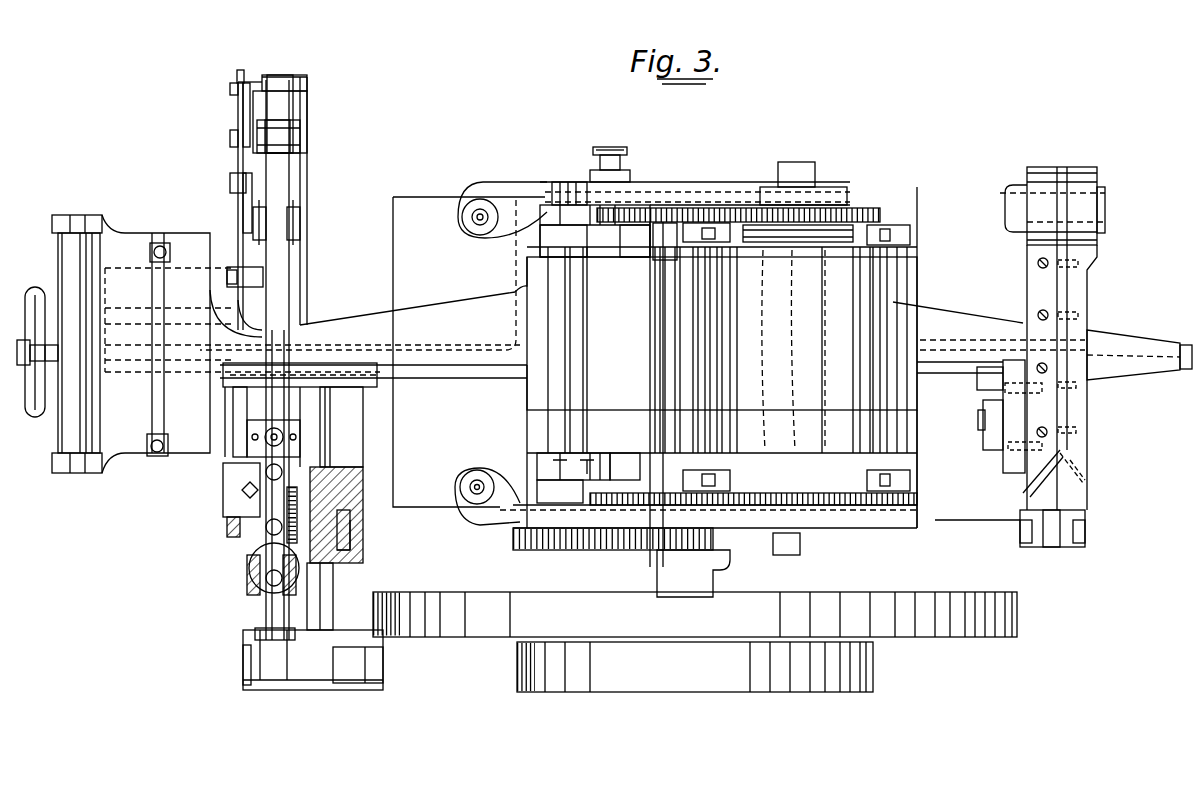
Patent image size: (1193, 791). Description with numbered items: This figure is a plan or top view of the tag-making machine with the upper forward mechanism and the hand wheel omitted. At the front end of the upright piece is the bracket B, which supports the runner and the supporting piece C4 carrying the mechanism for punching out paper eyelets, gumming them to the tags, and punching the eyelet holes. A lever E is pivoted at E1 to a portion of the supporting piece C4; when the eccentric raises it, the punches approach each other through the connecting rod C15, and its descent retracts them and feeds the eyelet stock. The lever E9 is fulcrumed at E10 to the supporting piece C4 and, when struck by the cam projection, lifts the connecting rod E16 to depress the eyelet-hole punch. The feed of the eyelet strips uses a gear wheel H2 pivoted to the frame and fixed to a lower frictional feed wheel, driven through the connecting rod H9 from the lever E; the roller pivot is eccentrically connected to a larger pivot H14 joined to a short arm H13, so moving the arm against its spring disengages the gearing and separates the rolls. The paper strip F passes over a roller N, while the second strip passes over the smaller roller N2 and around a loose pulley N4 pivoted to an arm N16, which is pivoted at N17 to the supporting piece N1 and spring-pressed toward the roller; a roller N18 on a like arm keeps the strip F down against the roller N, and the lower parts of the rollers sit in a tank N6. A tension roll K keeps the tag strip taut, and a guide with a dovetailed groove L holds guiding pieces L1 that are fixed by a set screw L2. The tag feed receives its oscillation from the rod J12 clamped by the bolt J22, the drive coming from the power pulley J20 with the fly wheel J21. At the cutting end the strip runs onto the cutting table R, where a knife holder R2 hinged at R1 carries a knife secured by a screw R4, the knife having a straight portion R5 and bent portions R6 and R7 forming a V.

The tension roll K is at (75, 255).
The dovetailed groove L is at (158, 398).
The guiding piece L1 is at (152, 250).
The set screw L2 is at (166, 250).
The roller N is at (290, 170).
The supporting piece N1 is at (243, 120).
The roller N2 is at (290, 272).
The loose pulley or sheave N4 is at (293, 218).
The tank N6 is at (298, 97).
The arm N16 is at (248, 103).
The pivot N17 is at (244, 74).
The roller N18 is at (292, 135).
The paper strip F is at (277, 360).
The bracket B is at (642, 358).
The rod J12 is at (636, 180).
The bolt J22 is at (616, 150).
The fly wheel J21 is at (695, 614).
The power pulley J20 is at (695, 667).
The cutting table R is at (1027, 283).
The hinge R1 is at (1072, 178).
The knife holder R2 is at (1075, 295).
The screw R4 is at (1060, 312).
The straight portion of knife R5 is at (1060, 410).
The bent portion of knife R6 is at (1060, 283).
The bent portion of knife R7 is at (1075, 480).
The lever E is at (258, 633).
The pivot E1 is at (245, 662).
The lever E9 is at (220, 400).
The fulcrum pivot E10 is at (210, 468).
The connecting rod E16 is at (227, 525).
The gear wheel H2 is at (300, 500).
The connecting rod H9 is at (235, 487).
The short arm H13 is at (345, 540).
The pivot H14 is at (320, 522).
The supporting piece C4 is at (318, 585).
The connecting rod C15 is at (250, 575).